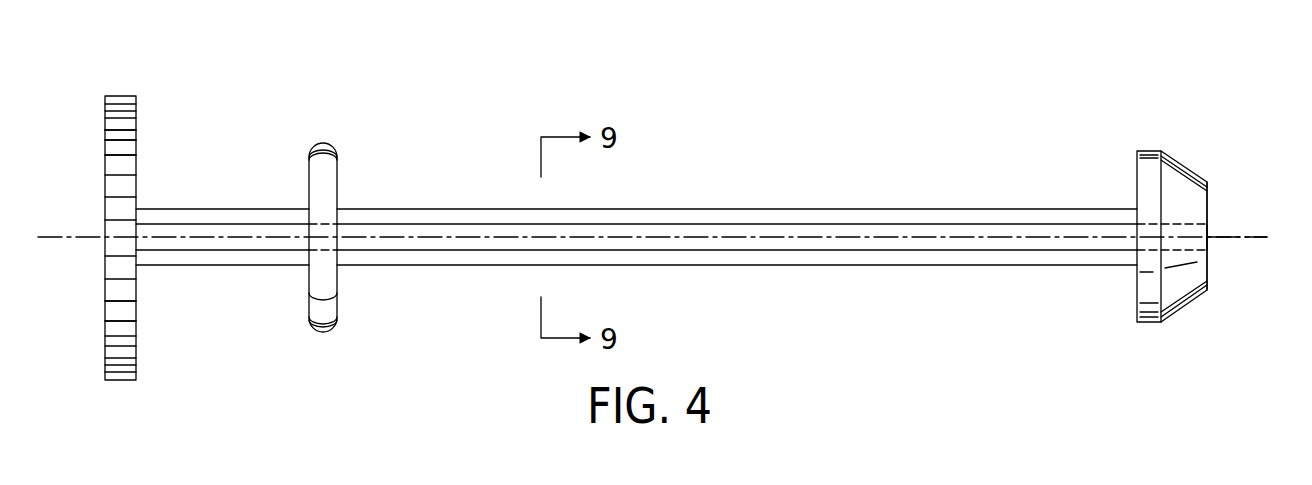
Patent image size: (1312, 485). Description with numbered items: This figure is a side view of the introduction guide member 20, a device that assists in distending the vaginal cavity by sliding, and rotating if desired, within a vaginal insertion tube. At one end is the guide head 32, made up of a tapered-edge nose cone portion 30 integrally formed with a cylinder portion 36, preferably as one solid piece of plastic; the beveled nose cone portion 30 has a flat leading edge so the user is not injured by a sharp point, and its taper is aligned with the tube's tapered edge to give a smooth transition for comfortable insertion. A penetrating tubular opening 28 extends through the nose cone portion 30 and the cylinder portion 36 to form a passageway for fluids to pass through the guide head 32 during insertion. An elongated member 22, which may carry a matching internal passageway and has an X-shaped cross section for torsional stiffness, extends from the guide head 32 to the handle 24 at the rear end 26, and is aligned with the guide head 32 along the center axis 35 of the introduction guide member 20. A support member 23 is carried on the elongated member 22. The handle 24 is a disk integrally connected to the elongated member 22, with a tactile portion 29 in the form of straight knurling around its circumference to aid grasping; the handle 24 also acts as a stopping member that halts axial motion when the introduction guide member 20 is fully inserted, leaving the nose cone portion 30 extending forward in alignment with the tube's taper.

The introduction guide member 20 is at (503, 120).
The elongated member 22 is at (700, 207).
The support member 23 is at (323, 142).
The handle 24 is at (137, 112).
The rear end 26 is at (106, 305).
The penetrating tubular opening 28 is at (1208, 233).
The tactile portion 29 is at (122, 150).
The nose cone portion 30 is at (1182, 160).
The guide head 32 is at (1208, 193).
The center axis 35 is at (1253, 238).
The cylinder portion 36 is at (1148, 151).